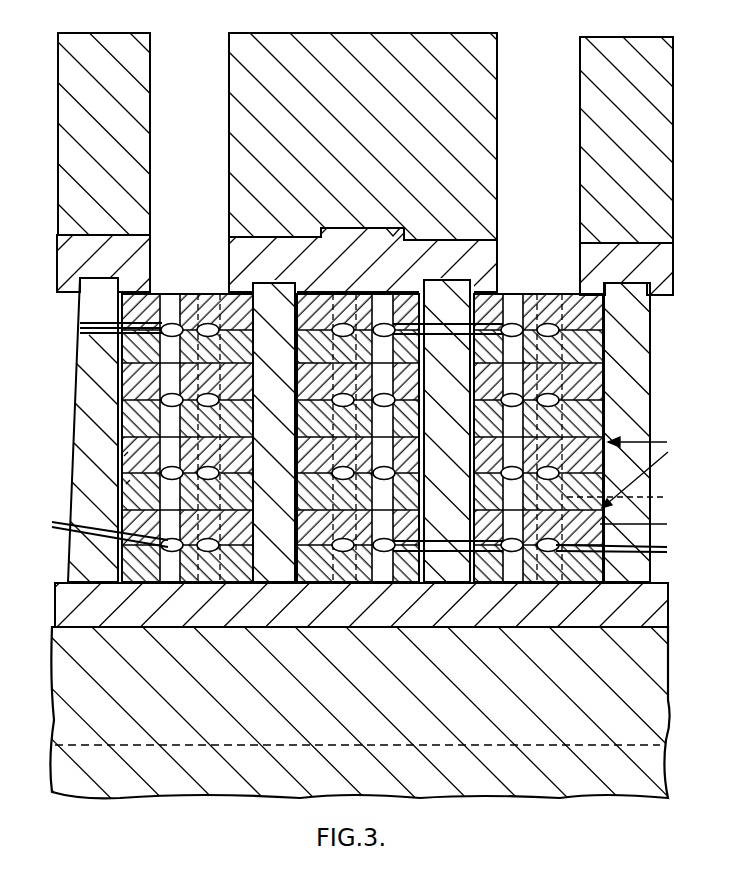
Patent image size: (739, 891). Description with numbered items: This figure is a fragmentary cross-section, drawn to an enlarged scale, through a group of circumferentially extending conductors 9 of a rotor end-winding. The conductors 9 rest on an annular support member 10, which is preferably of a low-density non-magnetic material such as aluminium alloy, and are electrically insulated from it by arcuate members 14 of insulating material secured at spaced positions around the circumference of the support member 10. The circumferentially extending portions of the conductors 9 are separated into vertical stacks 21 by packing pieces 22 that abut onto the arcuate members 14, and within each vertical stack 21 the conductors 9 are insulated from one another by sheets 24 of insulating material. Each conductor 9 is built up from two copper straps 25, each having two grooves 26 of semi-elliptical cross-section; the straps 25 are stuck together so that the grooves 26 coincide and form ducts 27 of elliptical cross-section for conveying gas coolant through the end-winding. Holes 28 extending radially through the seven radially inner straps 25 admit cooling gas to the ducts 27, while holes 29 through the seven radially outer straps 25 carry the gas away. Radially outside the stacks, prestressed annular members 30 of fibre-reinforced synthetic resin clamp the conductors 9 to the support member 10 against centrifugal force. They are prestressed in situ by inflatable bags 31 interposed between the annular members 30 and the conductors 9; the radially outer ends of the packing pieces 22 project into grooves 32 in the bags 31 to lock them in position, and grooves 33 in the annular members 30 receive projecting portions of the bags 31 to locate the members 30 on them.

The annular member 30 is at (608, 46).
The inflatable bag 31 is at (590, 257).
The groove 32 is at (452, 280).
The groove 33 is at (405, 232).
The vertical stack 21 is at (590, 297).
The packing piece 22 is at (663, 378).
The conductor 9 is at (598, 318).
The sheet of insulating material 24 is at (649, 470).
The copper strap 25 is at (130, 480).
The groove 26 is at (96, 528).
The duct 27 is at (543, 551).
The hole 28 is at (630, 499).
The hole 29 is at (647, 526).
The annular support member 10 is at (63, 640).
The arcuate member 14 is at (657, 610).